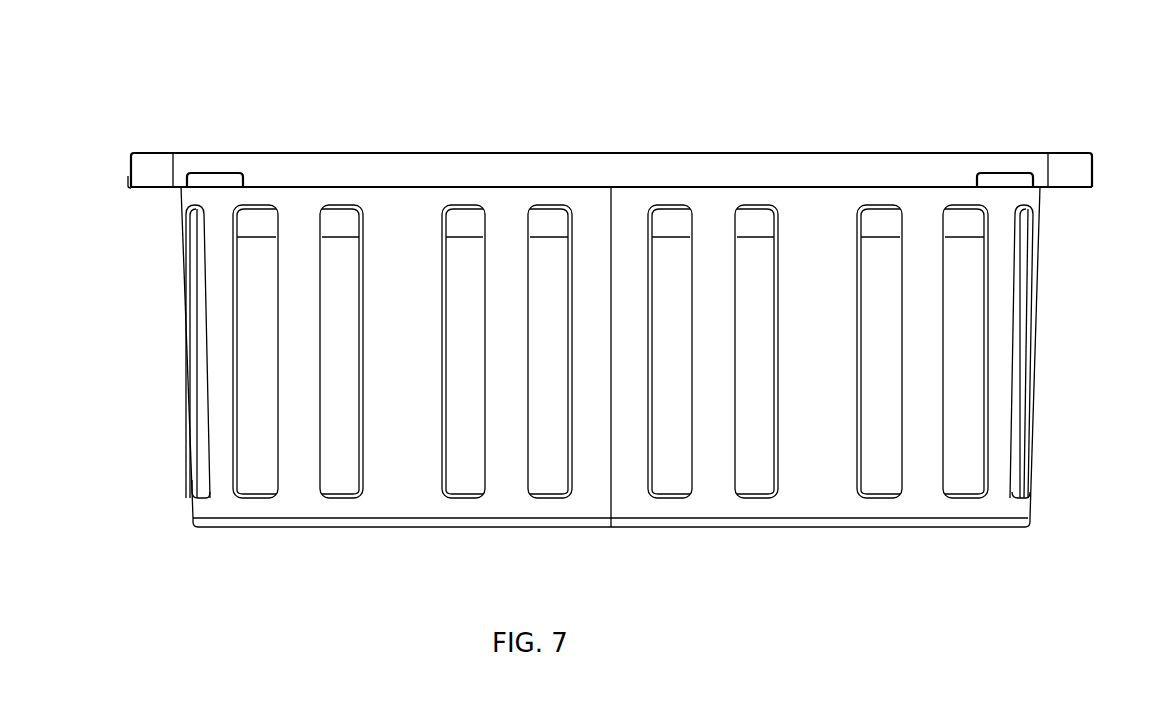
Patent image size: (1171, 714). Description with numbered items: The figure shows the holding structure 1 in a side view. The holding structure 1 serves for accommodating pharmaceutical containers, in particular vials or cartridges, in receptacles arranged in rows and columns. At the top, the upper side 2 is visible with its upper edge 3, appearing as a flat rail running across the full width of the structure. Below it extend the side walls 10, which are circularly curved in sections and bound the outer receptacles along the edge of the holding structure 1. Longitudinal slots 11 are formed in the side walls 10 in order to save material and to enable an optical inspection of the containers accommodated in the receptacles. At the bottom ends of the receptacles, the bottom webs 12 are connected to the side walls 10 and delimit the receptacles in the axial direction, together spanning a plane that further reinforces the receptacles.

The holding structure 1 is at (67, 64).
The upper side 2 is at (894, 153).
The upper edge 3 is at (786, 170).
The side wall 10 is at (1000, 354).
The slot 11 is at (960, 272).
The bottom web 12 is at (907, 523).